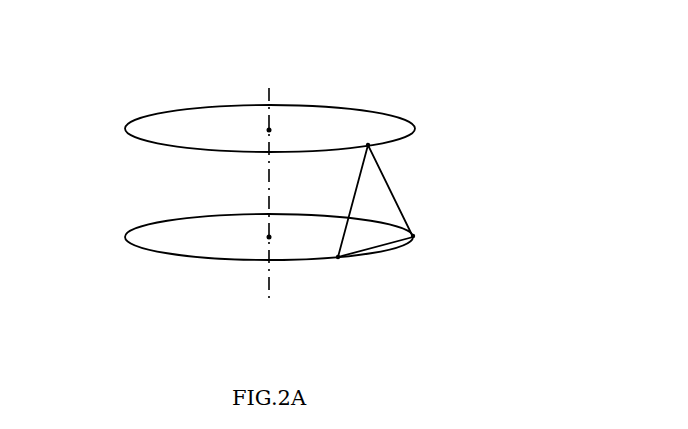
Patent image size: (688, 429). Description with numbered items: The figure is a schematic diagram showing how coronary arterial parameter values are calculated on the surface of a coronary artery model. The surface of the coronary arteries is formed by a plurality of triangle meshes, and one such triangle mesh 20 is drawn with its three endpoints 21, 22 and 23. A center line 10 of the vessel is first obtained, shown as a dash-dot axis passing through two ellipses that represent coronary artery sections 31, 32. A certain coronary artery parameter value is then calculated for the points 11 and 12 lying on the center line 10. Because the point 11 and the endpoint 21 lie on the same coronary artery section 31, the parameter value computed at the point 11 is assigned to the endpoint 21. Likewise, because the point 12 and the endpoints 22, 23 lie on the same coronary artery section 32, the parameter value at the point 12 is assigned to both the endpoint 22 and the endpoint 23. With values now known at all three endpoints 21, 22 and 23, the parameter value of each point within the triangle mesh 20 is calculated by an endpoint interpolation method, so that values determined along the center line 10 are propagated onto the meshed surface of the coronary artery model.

The center line 10 is at (266, 178).
The point in the center line 11 is at (248, 132).
The point in the center line 12 is at (248, 239).
The triangle mesh 20 is at (387, 212).
The endpoint 21 is at (368, 145).
The endpoint 22 is at (338, 257).
The endpoint 23 is at (413, 236).
The coronary artery section 31 is at (125, 131).
The coronary artery section 32 is at (125, 238).